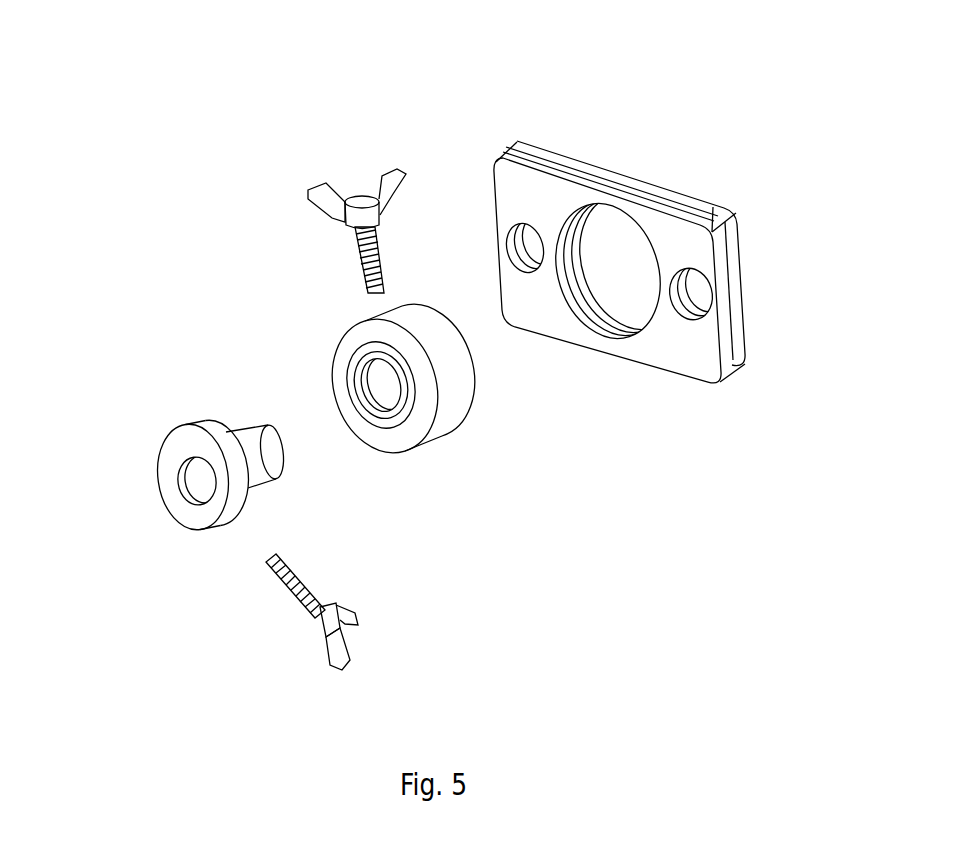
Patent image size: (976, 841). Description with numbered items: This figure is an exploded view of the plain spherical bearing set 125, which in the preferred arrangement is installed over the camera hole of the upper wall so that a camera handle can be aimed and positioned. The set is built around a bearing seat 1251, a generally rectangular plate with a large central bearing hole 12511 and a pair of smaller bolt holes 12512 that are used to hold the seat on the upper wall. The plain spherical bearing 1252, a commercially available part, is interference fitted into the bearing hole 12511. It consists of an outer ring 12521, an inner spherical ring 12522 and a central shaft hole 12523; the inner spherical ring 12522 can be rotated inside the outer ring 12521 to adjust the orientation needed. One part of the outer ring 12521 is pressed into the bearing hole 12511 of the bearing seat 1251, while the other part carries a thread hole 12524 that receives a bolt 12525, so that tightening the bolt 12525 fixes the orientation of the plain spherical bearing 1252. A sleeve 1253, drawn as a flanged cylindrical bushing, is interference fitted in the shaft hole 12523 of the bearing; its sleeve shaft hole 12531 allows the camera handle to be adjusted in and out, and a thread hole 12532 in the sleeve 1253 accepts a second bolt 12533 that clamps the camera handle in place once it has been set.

The plain spherical bearing set 125 is at (192, 75).
The bearing seat 1251 is at (683, 228).
The bearing hole 12511 is at (562, 257).
The bolt holes 12512 is at (518, 248).
The plain spherical bearing 1252 is at (552, 515).
The outer ring 12521 is at (445, 367).
The inner spherical ring 12522 is at (382, 353).
The shaft hole 12523 is at (380, 393).
The thread hole 12524 is at (378, 315).
The bolt 12525 is at (333, 203).
The sleeve 1253 is at (203, 430).
The sleeve shaft hole 12531 is at (193, 482).
The thread hole 12532 is at (236, 516).
The bolt 12533 is at (320, 612).